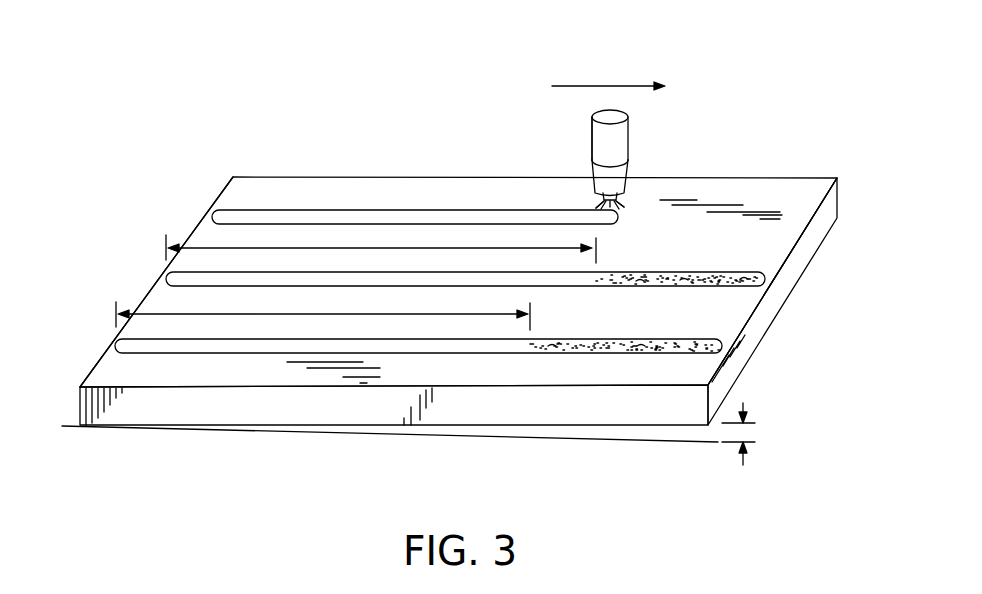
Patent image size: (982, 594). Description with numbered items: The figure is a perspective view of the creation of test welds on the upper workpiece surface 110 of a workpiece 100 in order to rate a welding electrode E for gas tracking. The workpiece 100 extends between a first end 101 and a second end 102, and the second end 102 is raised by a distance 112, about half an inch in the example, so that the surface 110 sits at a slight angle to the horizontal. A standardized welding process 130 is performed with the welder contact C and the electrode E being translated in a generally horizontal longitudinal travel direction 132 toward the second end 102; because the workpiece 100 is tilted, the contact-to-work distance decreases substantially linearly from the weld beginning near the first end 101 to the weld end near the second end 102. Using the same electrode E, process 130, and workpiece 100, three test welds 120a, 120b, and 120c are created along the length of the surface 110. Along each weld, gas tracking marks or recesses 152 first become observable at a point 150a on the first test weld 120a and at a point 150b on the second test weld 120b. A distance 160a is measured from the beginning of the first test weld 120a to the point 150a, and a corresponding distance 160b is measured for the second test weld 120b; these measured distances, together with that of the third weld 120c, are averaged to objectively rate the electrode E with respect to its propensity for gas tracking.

The workpiece 100 is at (466, 270).
The first end 101 is at (140, 259).
The second end 102 is at (822, 276).
The workpiece surface 110 is at (800, 192).
The distance 112 is at (743, 460).
The first test weld 120a is at (340, 347).
The second test weld 120b is at (372, 278).
The third test weld 120c is at (280, 208).
The standardized welding process 130 is at (592, 156).
The travel direction 132 is at (620, 86).
The point 150a is at (522, 353).
The point 150b is at (593, 288).
The gas tracking marks or recesses 152 is at (690, 280).
The distance 160a is at (233, 314).
The distance 160b is at (200, 247).
The welder contact C is at (628, 127).
The welding electrode E is at (617, 203).